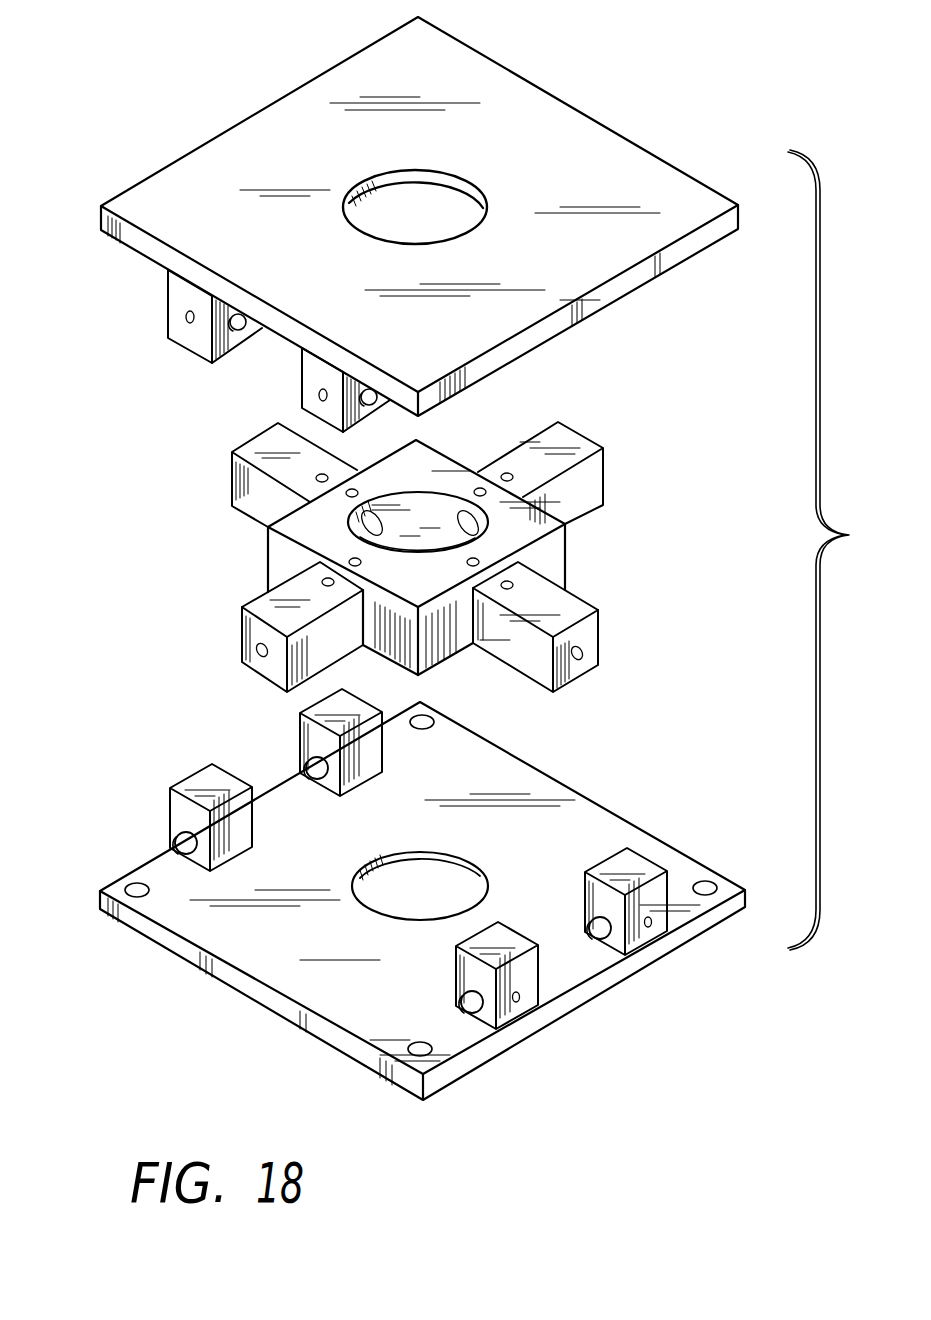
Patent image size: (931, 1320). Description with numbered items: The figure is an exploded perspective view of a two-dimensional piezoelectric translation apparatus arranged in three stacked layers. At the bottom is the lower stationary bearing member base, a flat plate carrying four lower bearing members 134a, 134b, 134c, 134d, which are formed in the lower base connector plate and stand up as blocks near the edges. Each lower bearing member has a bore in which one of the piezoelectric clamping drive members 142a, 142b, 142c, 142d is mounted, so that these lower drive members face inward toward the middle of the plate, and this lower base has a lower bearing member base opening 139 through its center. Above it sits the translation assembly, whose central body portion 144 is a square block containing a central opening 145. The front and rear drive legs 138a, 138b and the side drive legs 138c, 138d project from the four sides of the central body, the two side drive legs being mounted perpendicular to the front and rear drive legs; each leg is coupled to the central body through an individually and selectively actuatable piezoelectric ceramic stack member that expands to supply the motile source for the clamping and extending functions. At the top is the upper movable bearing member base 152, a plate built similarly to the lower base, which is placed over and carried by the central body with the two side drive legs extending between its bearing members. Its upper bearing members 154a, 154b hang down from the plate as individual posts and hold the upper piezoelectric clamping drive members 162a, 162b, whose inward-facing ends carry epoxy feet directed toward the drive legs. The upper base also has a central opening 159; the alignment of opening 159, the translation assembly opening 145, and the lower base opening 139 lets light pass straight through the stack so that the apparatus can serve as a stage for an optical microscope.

The upper movable bearing member base 152 is at (613, 148).
The central opening 159 is at (442, 210).
The upper bearing member 154a is at (176, 325).
The upper bearing member 154b is at (310, 407).
The piezoelectric clamping drive member 162a is at (243, 322).
The piezoelectric clamping drive member 162b is at (374, 397).
The central body portion 144 is at (553, 560).
The central opening 145 is at (428, 512).
The front drive leg 138a is at (250, 497).
The rear drive leg 138b is at (600, 612).
The side drive leg 138c is at (248, 628).
The side drive leg 138d is at (593, 470).
The lower bearing member base opening 139 is at (445, 880).
The lower bearing member 134a is at (197, 785).
The lower bearing member 134b is at (300, 743).
The lower bearing member 134c is at (498, 937).
The lower bearing member 134d is at (641, 862).
The piezoelectric clamping drive member 142a is at (174, 843).
The piezoelectric clamping drive member 142b is at (317, 780).
The piezoelectric clamping drive member 142c is at (460, 1002).
The piezoelectric clamping drive member 142d is at (603, 942).